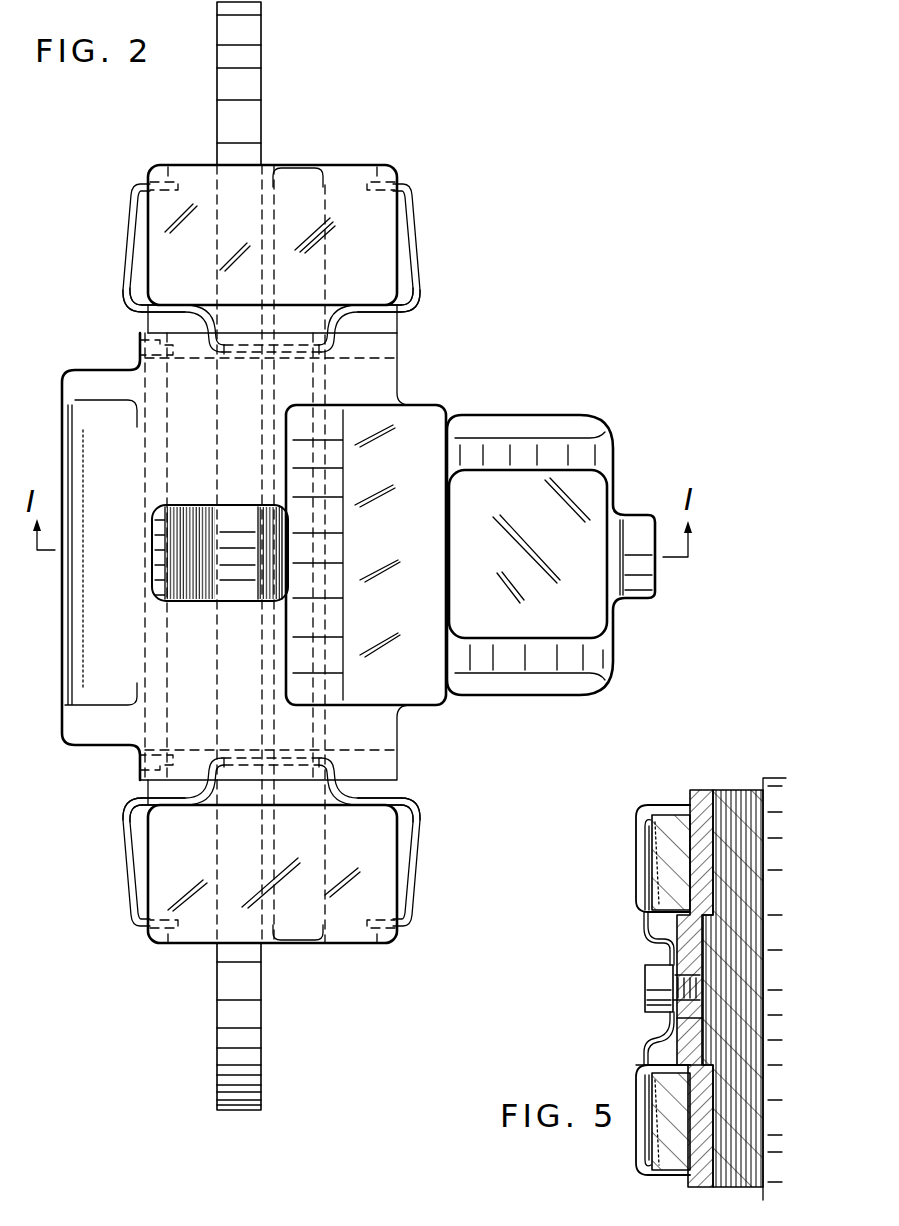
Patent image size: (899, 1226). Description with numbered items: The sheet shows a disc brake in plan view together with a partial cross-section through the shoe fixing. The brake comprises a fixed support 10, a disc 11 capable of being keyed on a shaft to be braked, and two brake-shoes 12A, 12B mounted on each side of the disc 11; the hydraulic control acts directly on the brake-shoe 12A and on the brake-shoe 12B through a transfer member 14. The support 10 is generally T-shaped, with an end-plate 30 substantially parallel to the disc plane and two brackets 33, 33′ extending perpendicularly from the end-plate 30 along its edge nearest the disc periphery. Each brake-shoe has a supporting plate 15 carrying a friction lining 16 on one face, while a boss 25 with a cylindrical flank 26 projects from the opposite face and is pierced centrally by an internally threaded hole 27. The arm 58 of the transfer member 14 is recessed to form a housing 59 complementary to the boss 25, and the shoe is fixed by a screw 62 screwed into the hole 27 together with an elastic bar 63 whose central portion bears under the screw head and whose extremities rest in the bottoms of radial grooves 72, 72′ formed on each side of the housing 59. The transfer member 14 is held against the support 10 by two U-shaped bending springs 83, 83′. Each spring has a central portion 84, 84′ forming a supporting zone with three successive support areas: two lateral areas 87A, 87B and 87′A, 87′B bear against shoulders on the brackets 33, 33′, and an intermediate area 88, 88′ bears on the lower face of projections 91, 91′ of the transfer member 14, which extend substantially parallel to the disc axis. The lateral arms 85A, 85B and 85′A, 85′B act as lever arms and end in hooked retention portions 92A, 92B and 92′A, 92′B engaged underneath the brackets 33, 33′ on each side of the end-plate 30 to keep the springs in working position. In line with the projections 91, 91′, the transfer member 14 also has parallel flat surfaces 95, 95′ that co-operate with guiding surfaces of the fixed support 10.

In FIG. 2, the support 10 is at (199, 955).
In FIG. 2, the disc 11 is at (265, 78).
In FIG. 5, the disc 11 is at (776, 776).
In FIG. 2, the brake-shoe 12A is at (257, 581).
In FIG. 2, the brake-shoe 12B is at (219, 529).
In FIG. 5, the brake-shoe 12B is at (687, 786).
In FIG. 2, the transfer member 14 is at (58, 621).
In FIG. 5, the supporting plate 15 is at (702, 800).
In FIG. 5, the friction lining 16 is at (733, 806).
In FIG. 5, the boss 25 is at (687, 1019).
In FIG. 5, the cylindrical flank 26 is at (694, 1074).
In FIG. 5, the internally threaded hole 27 is at (701, 979).
In FIG. 2, the end-plate 30 is at (336, 176).
In FIG. 2, the bracket 33 is at (366, 880).
In FIG. 2, the bracket 33′ is at (378, 246).
In FIG. 2, the arm 58 is at (85, 452).
In FIG. 5, the housing 59 is at (662, 1063).
In FIG. 5, the screw 62 is at (645, 970).
In FIG. 5, the elastic bar 63 is at (639, 932).
In FIG. 5, the groove 72 is at (648, 1138).
In FIG. 5, the groove 72′ is at (636, 828).
In FIG. 2, the bending spring 83 is at (419, 883).
In FIG. 2, the bending spring 83′ is at (422, 262).
In FIG. 2, the central portion 84 is at (384, 798).
In FIG. 2, the central portion 84′ is at (384, 319).
In FIG. 2, the lateral arm 85A is at (418, 843).
In FIG. 2, the lateral arm 85B is at (128, 856).
In FIG. 2, the lateral arm 85′A is at (421, 290).
In FIG. 2, the lateral arm 85′B is at (129, 285).
In FIG. 2, the lateral support area 87A is at (410, 808).
In FIG. 2, the lateral support area 87B is at (165, 806).
In FIG. 2, the lateral support area 87′A is at (372, 320).
In FIG. 2, the lateral support area 87′B is at (166, 302).
In FIG. 2, the intermediate support area 88 is at (248, 760).
In FIG. 2, the intermediate support area 88′ is at (240, 352).
In FIG. 2, the projection 91 is at (165, 770).
In FIG. 2, the projection 91′ is at (156, 338).
In FIG. 2, the hooked retention portion 92A is at (395, 941).
In FIG. 2, the hooked retention portion 92B is at (160, 918).
In FIG. 2, the hooked retention portion 92′A is at (386, 180).
In FIG. 2, the hooked retention portion 92′B is at (166, 180).
In FIG. 2, the flat surface 95 is at (150, 758).
In FIG. 2, the flat surface 95′ is at (140, 345).